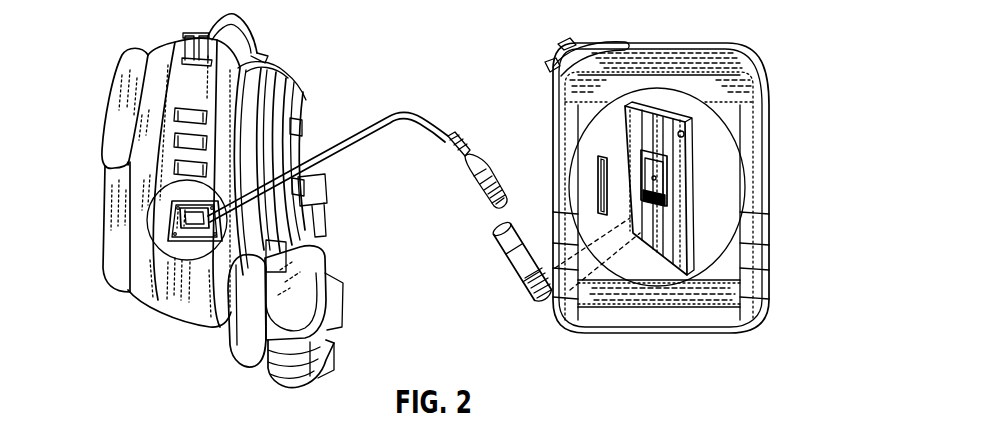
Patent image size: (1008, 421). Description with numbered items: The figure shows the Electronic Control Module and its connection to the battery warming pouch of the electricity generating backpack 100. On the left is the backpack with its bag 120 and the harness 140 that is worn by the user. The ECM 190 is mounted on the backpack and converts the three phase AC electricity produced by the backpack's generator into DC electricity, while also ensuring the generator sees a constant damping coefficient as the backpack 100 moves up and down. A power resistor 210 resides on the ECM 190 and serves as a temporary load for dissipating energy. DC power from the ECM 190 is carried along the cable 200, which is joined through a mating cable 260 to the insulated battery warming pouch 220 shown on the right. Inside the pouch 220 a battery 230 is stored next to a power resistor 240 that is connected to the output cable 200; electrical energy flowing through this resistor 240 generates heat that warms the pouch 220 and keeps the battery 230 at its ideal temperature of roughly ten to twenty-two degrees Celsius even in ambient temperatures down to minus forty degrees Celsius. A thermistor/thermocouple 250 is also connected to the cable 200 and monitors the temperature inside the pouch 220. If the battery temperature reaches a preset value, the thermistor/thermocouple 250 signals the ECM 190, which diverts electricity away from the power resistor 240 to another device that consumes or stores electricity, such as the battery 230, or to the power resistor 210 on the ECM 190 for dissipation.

The electricity generating backpack 100 is at (297, 28).
The bag 120 is at (121, 107).
The harness 140 is at (330, 208).
The Electronic Control Module (ECM) 190 is at (168, 231).
The cable 200 is at (405, 112).
The power resistor 210 is at (196, 221).
The insulated battery warming pouch 220 is at (597, 42).
The battery 230 is at (637, 133).
The power resistor 240 is at (646, 162).
The thermistor/thermocouple 250 is at (598, 182).
The mating cable 260 is at (518, 278).